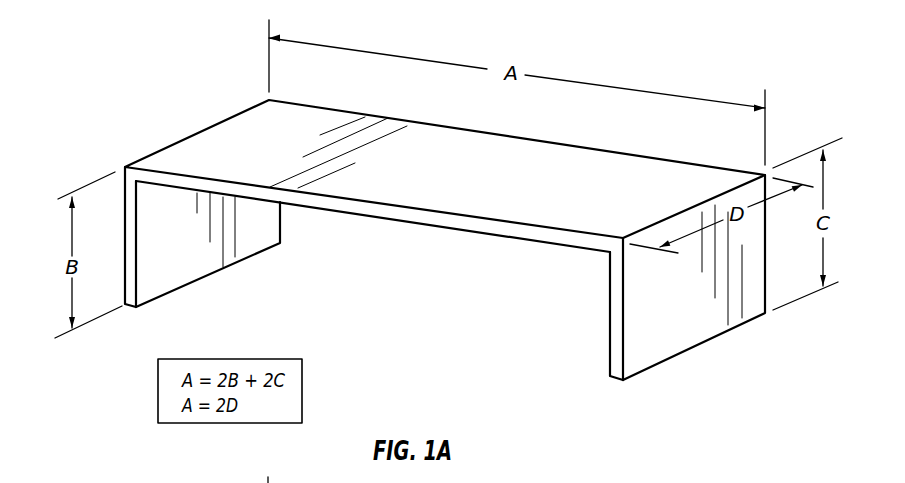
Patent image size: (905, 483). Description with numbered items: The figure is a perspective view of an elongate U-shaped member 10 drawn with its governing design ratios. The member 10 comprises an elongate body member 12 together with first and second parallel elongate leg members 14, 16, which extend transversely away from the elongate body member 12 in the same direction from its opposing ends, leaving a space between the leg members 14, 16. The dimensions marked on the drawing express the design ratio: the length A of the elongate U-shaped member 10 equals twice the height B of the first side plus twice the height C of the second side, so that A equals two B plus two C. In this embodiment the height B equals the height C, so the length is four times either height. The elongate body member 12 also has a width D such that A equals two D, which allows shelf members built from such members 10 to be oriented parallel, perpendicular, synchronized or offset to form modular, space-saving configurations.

The elongate U-shaped member 10 is at (445, 217).
The elongate body member 12 is at (492, 190).
The first parallel elongate leg member 14 is at (178, 267).
The second parallel elongate leg member 16 is at (660, 327).